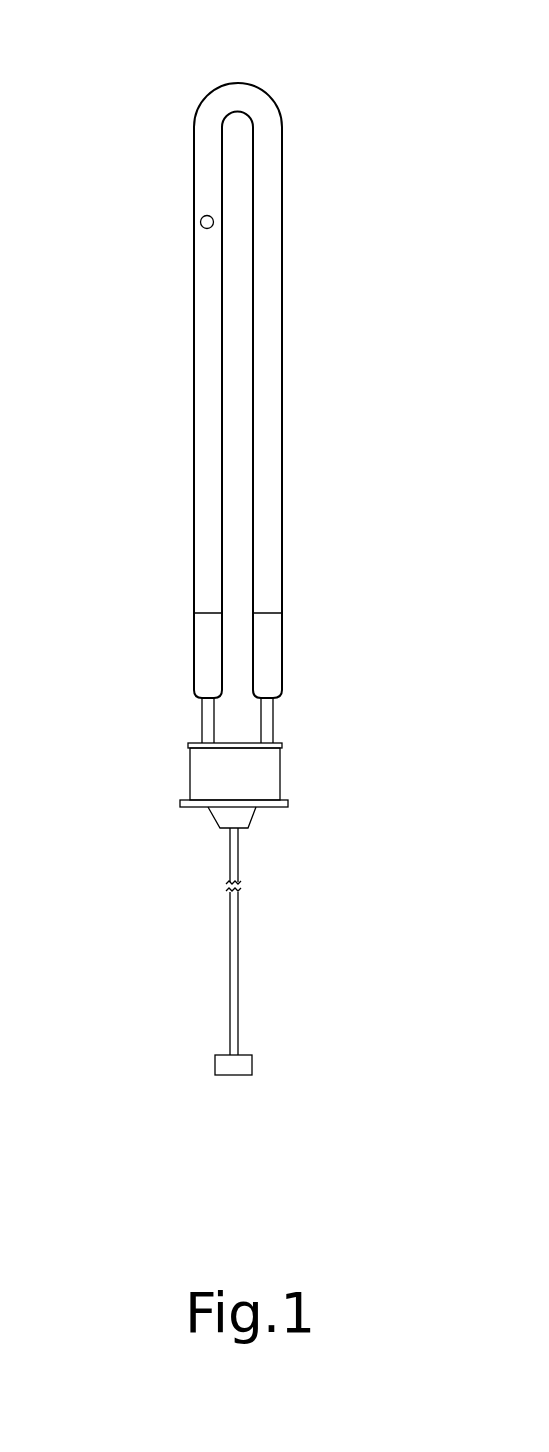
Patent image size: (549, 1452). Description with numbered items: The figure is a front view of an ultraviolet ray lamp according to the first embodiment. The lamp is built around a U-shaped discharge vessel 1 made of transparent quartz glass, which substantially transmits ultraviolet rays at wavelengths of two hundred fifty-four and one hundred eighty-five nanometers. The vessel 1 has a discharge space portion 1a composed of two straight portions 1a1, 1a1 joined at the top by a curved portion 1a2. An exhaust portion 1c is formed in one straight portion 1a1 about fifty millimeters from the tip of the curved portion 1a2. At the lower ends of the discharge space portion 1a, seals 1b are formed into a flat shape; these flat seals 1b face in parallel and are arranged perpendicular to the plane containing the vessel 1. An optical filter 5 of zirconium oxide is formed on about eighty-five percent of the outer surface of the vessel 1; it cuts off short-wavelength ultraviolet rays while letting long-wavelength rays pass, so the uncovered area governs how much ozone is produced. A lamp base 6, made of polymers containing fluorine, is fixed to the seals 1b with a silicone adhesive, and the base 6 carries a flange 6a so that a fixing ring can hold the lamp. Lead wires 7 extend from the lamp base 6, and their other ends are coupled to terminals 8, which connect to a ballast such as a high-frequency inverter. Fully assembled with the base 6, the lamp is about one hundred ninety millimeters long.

The discharge vessel 1 is at (242, 414).
The discharge space portion 1a is at (242, 349).
The straight portion 1a1 is at (194, 350).
The curved portion 1a2 is at (258, 87).
The seal 1b is at (270, 727).
The exhaust portion 1c is at (200, 222).
The optical filter 5 is at (193, 545).
The lamp base 6 is at (246, 775).
The flange 6a is at (288, 805).
The lead wire 7 is at (231, 935).
The terminal 8 is at (215, 1063).